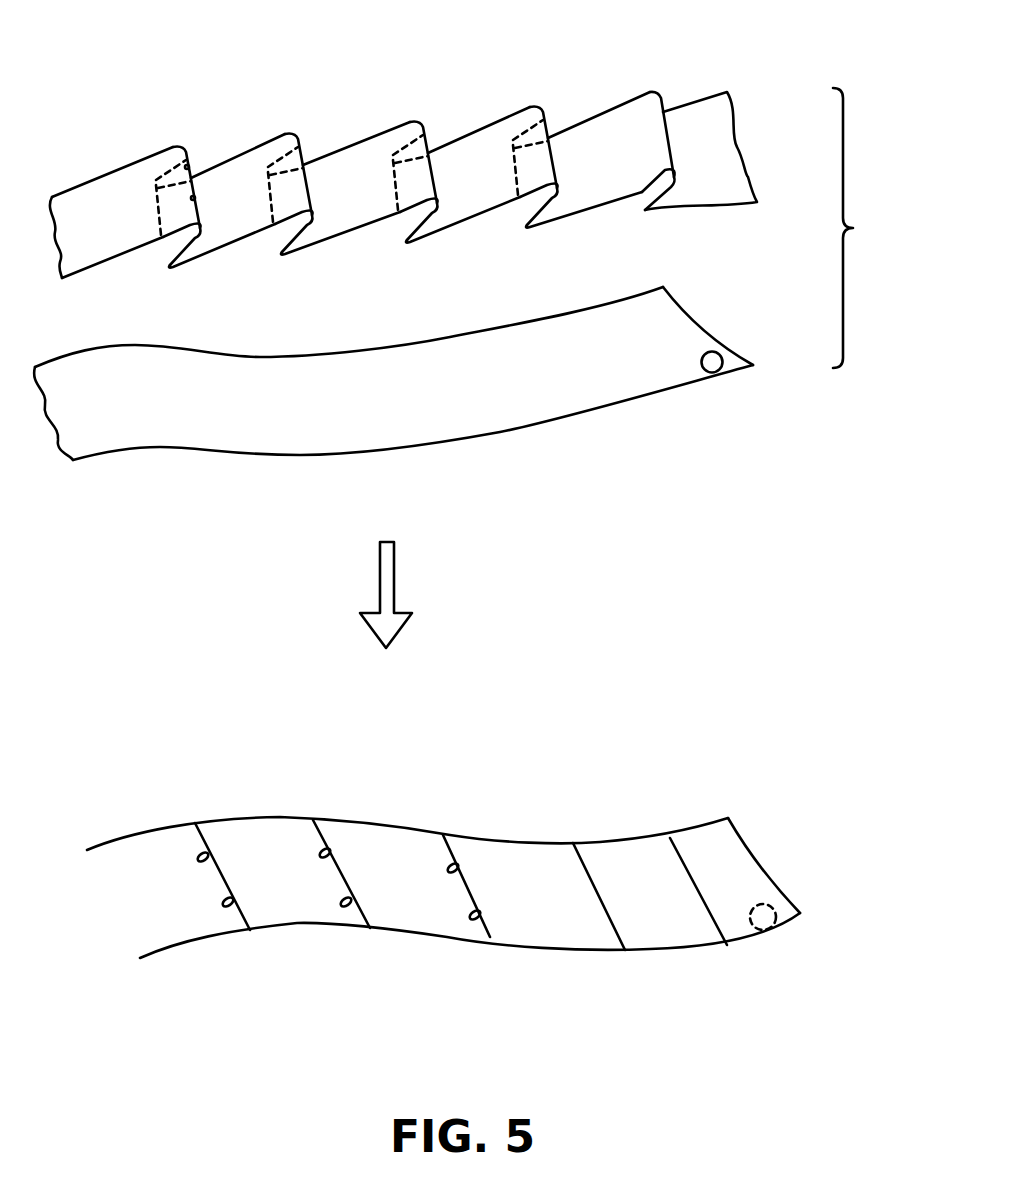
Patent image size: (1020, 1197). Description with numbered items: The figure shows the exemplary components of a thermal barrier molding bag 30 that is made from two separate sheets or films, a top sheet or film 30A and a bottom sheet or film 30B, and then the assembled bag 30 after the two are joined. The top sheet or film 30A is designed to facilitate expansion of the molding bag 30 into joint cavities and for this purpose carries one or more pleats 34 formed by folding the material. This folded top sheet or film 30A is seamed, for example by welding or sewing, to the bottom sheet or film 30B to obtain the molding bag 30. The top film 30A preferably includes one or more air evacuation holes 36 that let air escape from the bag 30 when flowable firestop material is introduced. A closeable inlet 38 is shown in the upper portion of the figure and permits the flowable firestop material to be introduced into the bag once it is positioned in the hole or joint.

The thermal barrier molding bag 30 is at (902, 247).
The top sheet or film 30A is at (760, 108).
The bottom sheet or film 30B is at (687, 402).
The pleats 34 is at (313, 143).
The air evacuation holes 36 is at (188, 166).
The closeable inlet 38 is at (712, 356).